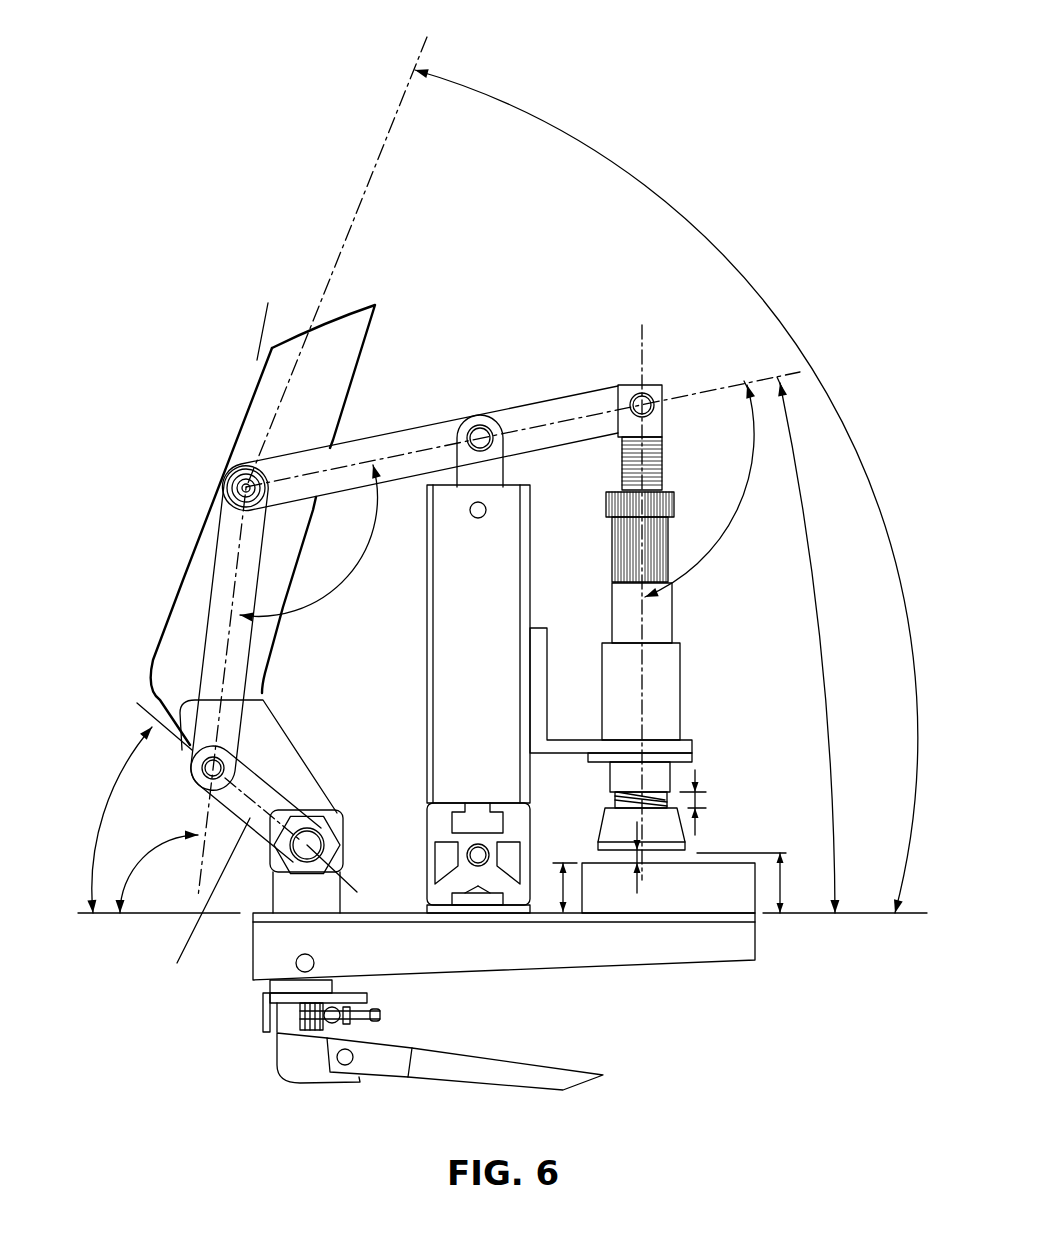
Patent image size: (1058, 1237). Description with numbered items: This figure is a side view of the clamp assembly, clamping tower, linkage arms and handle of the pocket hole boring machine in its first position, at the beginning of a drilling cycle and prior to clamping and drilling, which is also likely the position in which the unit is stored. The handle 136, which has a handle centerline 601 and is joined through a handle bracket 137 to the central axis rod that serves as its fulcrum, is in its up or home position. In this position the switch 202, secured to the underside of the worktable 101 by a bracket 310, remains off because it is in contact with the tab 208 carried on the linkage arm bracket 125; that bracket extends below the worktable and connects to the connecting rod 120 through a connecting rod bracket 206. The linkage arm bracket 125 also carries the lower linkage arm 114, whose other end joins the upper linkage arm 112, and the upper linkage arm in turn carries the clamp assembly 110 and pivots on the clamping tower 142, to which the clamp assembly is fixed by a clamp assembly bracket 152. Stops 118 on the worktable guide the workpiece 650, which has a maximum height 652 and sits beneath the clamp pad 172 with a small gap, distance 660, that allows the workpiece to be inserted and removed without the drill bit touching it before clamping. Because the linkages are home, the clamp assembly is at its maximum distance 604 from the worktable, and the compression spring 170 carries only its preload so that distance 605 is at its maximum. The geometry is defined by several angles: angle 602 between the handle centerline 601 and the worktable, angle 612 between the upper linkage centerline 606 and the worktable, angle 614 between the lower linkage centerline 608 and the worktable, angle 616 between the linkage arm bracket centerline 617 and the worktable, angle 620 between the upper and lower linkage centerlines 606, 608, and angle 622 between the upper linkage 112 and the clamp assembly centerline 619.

The worktable 101 is at (733, 920).
The clamp assembly 110 is at (675, 370).
The upper linkage arm 112 is at (420, 438).
The lower linkage arm 114 is at (225, 577).
The stops 118 is at (428, 853).
The connecting rod 120 is at (484, 1085).
The linkage arm bracket 125 is at (199, 904).
The handle 136 is at (180, 635).
The handle bracket 137 is at (278, 758).
The clamping tower 142 is at (428, 706).
The clamp assembly bracket 152 is at (540, 642).
The compression spring 170 is at (617, 795).
The clamp pad 172 is at (665, 835).
The switch 202 is at (385, 1015).
The connecting rod bracket 206 is at (378, 1083).
The tab 208 is at (262, 1015).
The bracket 310 is at (370, 1002).
The handle centerline 601 is at (365, 205).
The angle 602 is at (838, 410).
The distance 604 is at (782, 882).
The distance 605 is at (698, 800).
The upper linkage centerline 606 is at (708, 392).
The lower linkage centerline 608 is at (262, 333).
The angle 612 is at (821, 639).
The angle 614 is at (157, 850).
The angle 616 is at (120, 800).
The linkage arm bracket centerline 617 is at (160, 733).
The clamp assembly centerline 619 is at (645, 665).
The angle 620 is at (348, 576).
The angle 622 is at (737, 517).
The workpiece 650 is at (652, 903).
The maximum height 652 is at (563, 868).
The distance 660 is at (637, 882).